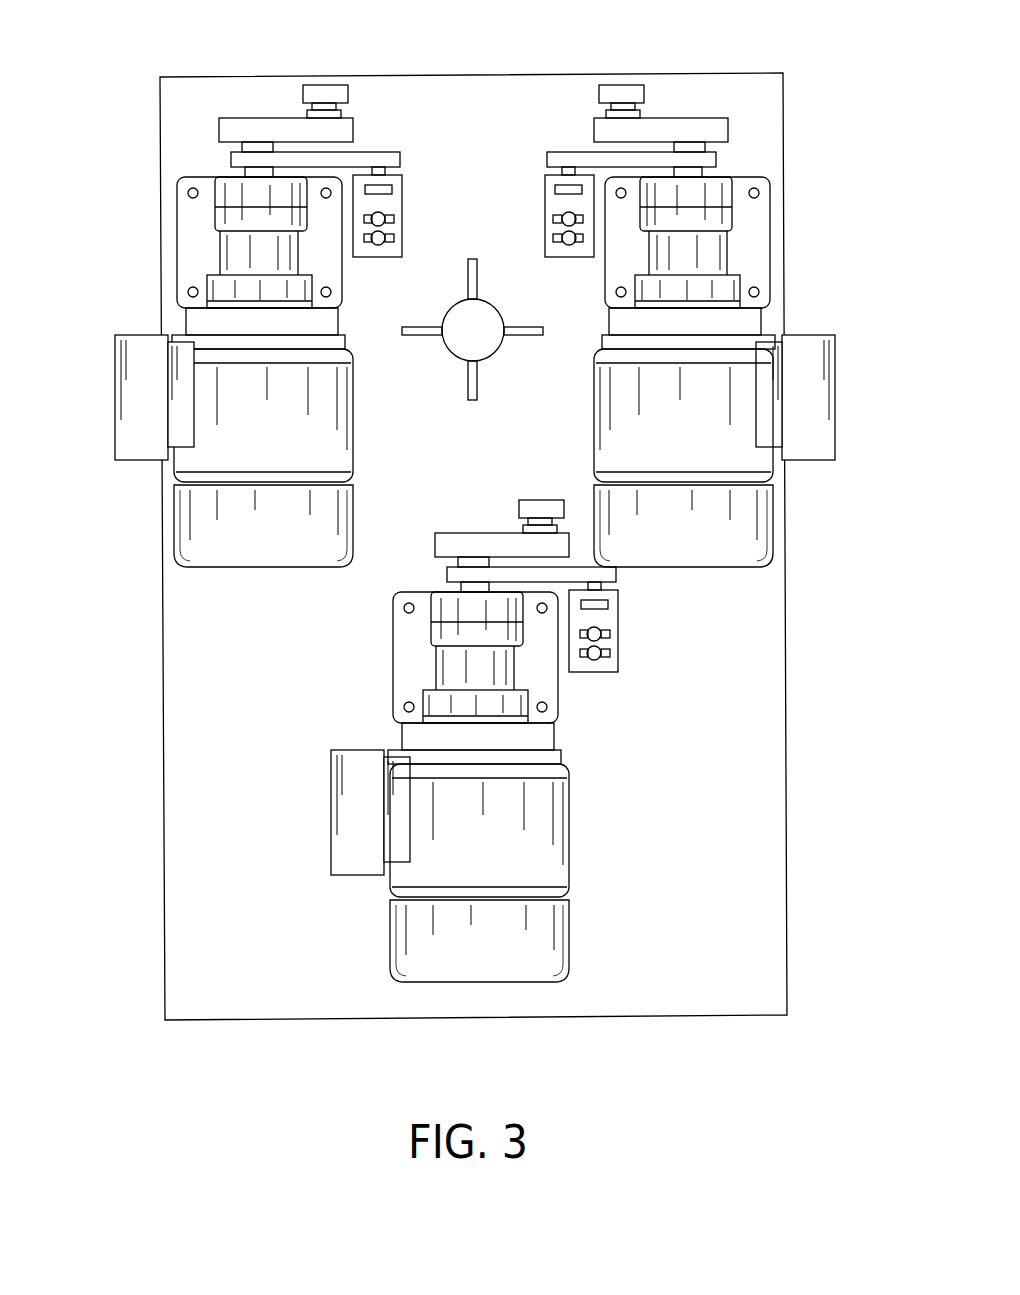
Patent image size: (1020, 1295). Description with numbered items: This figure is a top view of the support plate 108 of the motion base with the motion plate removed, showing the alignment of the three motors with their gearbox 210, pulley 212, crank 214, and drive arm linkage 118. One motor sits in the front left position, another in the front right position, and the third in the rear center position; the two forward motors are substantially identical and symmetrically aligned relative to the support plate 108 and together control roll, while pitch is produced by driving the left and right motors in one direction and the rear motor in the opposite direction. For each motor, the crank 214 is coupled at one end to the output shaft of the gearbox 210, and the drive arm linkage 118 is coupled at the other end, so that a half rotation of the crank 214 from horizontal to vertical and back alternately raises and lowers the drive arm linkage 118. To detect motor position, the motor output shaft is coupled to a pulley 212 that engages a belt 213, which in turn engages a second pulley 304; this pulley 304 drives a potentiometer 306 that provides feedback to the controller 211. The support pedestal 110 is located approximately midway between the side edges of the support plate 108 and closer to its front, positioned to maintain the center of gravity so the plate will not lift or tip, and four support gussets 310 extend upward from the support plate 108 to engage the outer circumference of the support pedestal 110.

The support plate 108 is at (737, 985).
The support pedestal 110 is at (472, 349).
The drive arm linkage 118 is at (332, 82).
The gearbox 210 is at (177, 265).
The controller 211 is at (115, 425).
The pulley 212 is at (228, 152).
The belt 213 is at (402, 156).
The crank 214 is at (219, 130).
The pulley 304 is at (368, 151).
The potentiometer 306 is at (403, 233).
The support gussets 310 is at (473, 401).